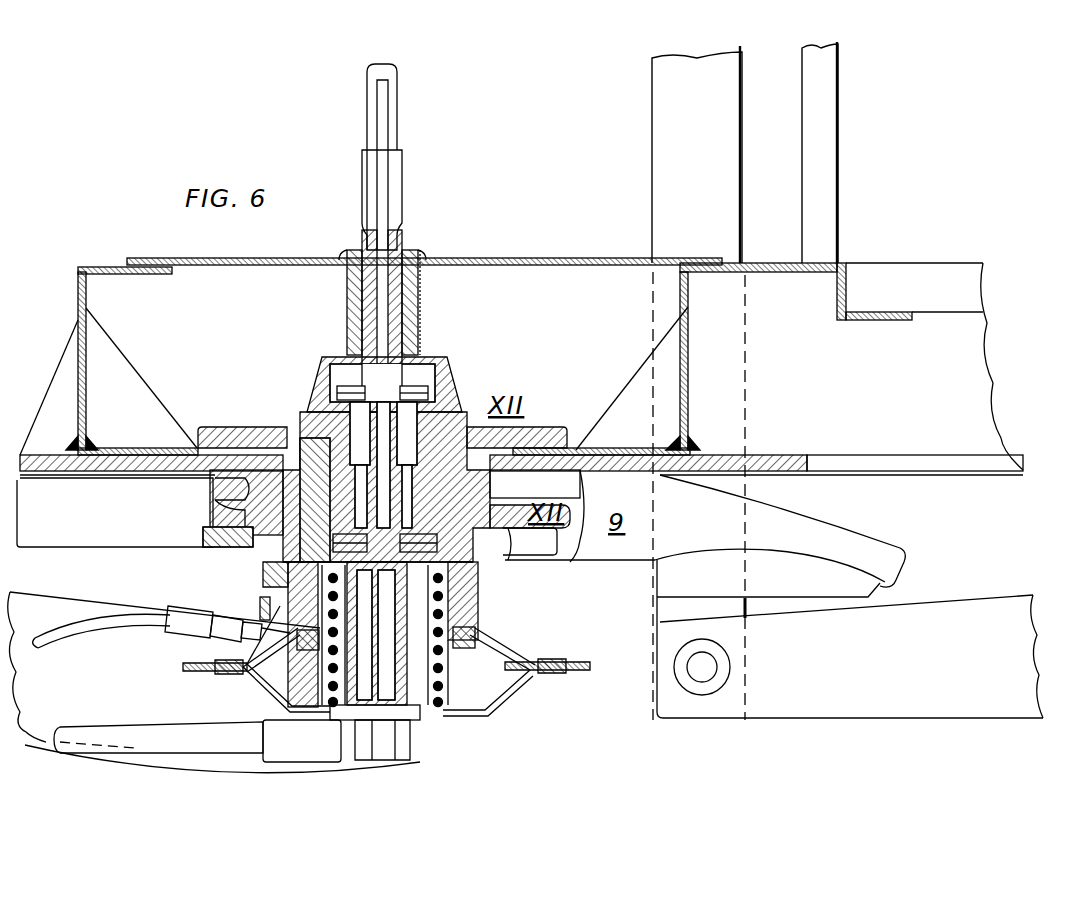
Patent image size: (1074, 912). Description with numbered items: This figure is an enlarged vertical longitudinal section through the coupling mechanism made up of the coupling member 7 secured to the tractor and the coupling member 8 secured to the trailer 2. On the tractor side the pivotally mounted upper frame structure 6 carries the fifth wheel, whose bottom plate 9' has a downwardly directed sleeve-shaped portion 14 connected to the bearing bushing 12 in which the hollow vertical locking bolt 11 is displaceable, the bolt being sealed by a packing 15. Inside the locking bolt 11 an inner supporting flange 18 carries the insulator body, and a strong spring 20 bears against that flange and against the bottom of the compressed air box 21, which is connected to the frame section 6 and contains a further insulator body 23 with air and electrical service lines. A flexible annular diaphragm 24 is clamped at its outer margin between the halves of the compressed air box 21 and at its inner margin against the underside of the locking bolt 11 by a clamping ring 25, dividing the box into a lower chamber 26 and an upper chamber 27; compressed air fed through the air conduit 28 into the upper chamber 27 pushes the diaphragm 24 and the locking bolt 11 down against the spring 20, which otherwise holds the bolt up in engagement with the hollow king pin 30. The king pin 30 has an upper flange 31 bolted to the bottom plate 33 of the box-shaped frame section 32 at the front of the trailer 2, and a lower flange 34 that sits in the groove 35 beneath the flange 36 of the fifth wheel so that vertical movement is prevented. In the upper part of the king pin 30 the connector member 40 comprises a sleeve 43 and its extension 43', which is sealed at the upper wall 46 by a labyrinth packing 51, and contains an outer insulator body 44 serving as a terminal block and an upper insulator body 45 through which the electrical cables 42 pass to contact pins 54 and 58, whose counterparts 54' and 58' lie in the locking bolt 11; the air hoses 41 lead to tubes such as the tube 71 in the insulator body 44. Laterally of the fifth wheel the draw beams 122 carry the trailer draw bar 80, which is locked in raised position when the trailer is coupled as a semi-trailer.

The trailer 2 is at (902, 273).
The upper frame structure 6 is at (164, 667).
The coupling member 7 is at (608, 566).
The semi-trailer coupling member 8 is at (529, 432).
The plate 9' is at (208, 530).
The locking bolt 11 is at (115, 512).
The bearing bushing 12 is at (500, 598).
The sleeve-shaped portion 14 is at (513, 624).
The packing 15 is at (290, 600).
The inner supporting flange 18 is at (290, 577).
The spring 20 is at (447, 668).
The compressed air box 21 is at (485, 708).
The insulator body 23 is at (418, 722).
The annular diaphragm 24 is at (525, 672).
The clamping ring 25 is at (310, 666).
The lower chamber 26 is at (256, 659).
The upper chamber 27 is at (221, 624).
The air conduit 28 is at (116, 622).
The king pin 30 is at (212, 504).
The upper flange 31 is at (226, 438).
The frame section 32 is at (86, 268).
The bottom plate 33 is at (130, 456).
The flange 34 is at (518, 562).
The groove 35 is at (580, 504).
The flange 36 is at (534, 438).
The connector member 40 is at (320, 362).
The air hose 41 is at (392, 128).
The electrical cable 42 is at (385, 170).
The sleeve 43 is at (471, 336).
The extension 43' is at (442, 302).
The outer insulator body 44 is at (320, 438).
The upper insulator body 45 is at (422, 277).
The upper wall 46 is at (582, 264).
The labyrinth packing 51 is at (424, 252).
The contact pin 54 is at (374, 466).
The contact pin 54' is at (327, 556).
The contact pin 58 is at (422, 382).
The contact pin 58' is at (553, 594).
The tube 71 is at (347, 290).
The draw bar 80 is at (654, 154).
The draw beam 122 is at (978, 592).